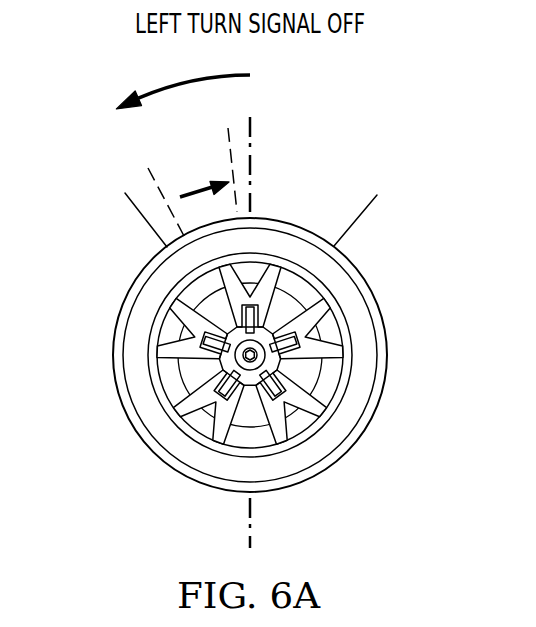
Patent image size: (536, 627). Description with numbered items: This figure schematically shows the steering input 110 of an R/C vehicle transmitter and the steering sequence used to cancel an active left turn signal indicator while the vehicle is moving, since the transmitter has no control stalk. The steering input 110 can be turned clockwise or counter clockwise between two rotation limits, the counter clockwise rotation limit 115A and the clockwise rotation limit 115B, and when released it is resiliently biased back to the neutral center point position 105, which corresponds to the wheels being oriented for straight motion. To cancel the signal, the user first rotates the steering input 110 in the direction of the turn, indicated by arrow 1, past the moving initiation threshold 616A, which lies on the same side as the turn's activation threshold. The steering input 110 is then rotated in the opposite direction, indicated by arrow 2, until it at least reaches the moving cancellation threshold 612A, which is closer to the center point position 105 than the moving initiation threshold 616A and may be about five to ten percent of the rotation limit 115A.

The steering input 110 is at (168, 465).
The center point position 105 is at (252, 165).
The moving cancellation threshold 612A is at (228, 137).
The moving initiation threshold 616A is at (147, 161).
The rotation limit 115A is at (140, 222).
The rotation limit 115B is at (358, 217).
The handlebar rotation direction arrow 1 is at (183, 81).
The steering direction arrow 2 is at (204, 174).